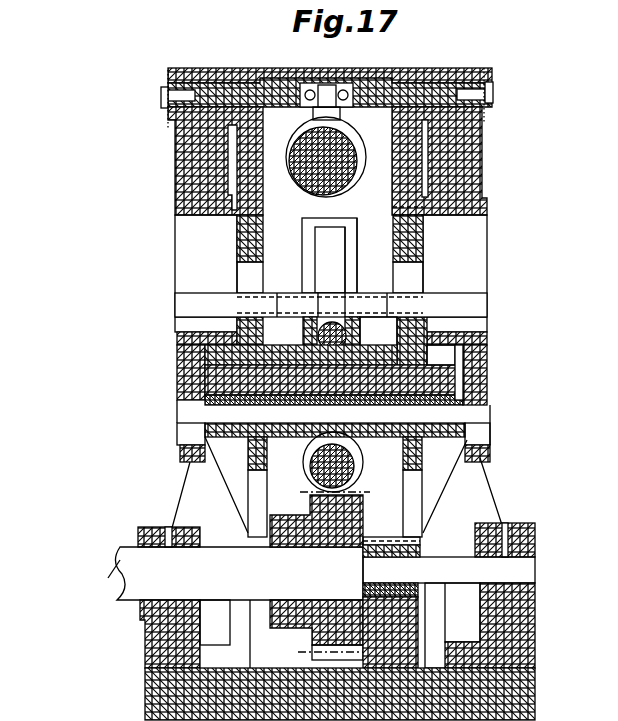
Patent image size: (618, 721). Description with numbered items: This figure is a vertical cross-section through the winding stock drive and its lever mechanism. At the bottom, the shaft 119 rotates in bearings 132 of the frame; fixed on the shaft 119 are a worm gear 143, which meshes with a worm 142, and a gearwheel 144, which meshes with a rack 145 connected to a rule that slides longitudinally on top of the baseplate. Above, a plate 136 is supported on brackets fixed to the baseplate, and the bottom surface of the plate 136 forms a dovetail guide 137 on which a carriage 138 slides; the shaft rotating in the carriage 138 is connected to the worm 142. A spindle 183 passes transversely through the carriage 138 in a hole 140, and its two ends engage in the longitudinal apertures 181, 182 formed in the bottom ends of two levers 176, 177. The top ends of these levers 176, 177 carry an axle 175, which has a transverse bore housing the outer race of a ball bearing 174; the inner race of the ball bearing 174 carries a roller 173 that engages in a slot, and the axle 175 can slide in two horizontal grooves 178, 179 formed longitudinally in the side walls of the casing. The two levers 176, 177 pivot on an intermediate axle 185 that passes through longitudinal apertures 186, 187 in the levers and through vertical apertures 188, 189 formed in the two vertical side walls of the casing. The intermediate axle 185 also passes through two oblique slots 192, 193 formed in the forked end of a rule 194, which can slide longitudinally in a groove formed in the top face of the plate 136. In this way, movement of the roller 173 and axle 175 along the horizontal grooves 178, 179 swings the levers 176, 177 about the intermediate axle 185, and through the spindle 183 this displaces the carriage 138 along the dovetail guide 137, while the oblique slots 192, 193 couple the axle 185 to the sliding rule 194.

The shaft 119 is at (128, 605).
The bearings 132 is at (148, 530).
The plate 136 is at (225, 376).
The dovetail guide 137 is at (428, 382).
The carriage 138 is at (420, 394).
The hole 140 is at (385, 428).
The worm 142 is at (318, 470).
The worm gear 143 is at (316, 654).
The gearwheel 144 is at (388, 538).
The rack 145 is at (400, 635).
The roller 173 is at (288, 120).
The ball bearing 174 is at (347, 85).
The axle 175 is at (430, 83).
The lever 176 is at (190, 175).
The lever 177 is at (463, 158).
The horizontal groove 178 is at (452, 86).
The horizontal groove 179 is at (214, 82).
The longitudinal aperture 181 is at (190, 438).
The longitudinal aperture 182 is at (478, 435).
The spindle 183 is at (192, 413).
The intermediate axle 185 is at (185, 305).
The longitudinal aperture 186 is at (185, 238).
The longitudinal aperture 187 is at (470, 259).
The vertical aperture 188 is at (247, 278).
The vertical aperture 189 is at (410, 276).
The oblique slot 192 is at (308, 241).
The oblique slot 193 is at (350, 244).
The rule 194 is at (310, 349).